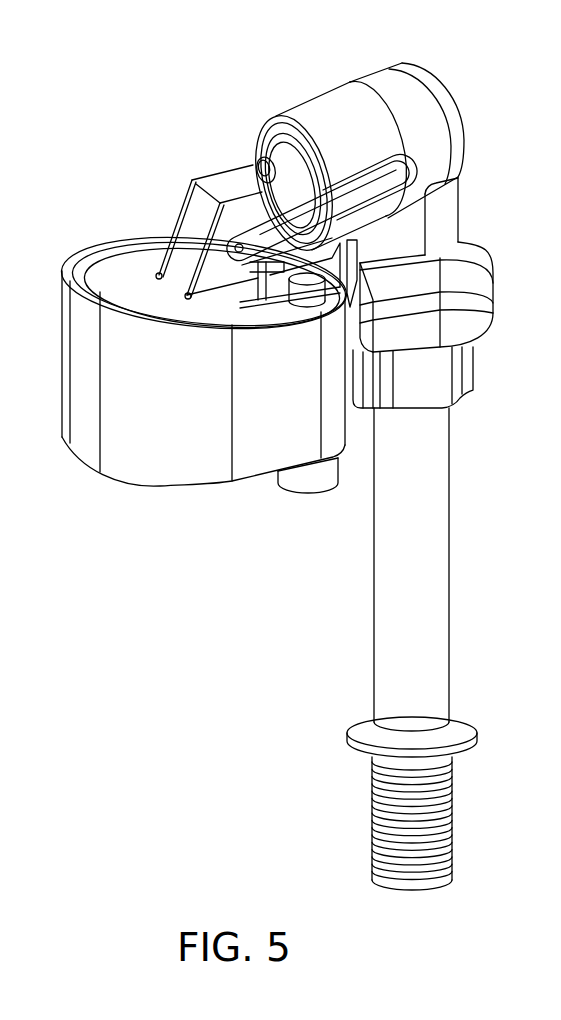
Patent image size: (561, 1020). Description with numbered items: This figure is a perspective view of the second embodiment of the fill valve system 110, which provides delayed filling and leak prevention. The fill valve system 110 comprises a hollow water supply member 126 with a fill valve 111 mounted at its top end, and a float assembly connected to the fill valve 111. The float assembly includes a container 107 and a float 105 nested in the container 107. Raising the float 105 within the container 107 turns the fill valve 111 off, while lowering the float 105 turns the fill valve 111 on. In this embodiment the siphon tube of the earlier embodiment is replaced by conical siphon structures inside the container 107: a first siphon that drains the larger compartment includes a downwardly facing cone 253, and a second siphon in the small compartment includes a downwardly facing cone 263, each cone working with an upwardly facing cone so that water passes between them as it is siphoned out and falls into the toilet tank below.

The float 105 is at (147, 275).
The container 107 is at (189, 474).
The fill valve system 110 is at (462, 110).
The fill valve 111 is at (323, 103).
The water supply member 126 is at (448, 595).
The downwardly facing cone 253 is at (293, 300).
The downwardly facing cone 263 is at (258, 216).